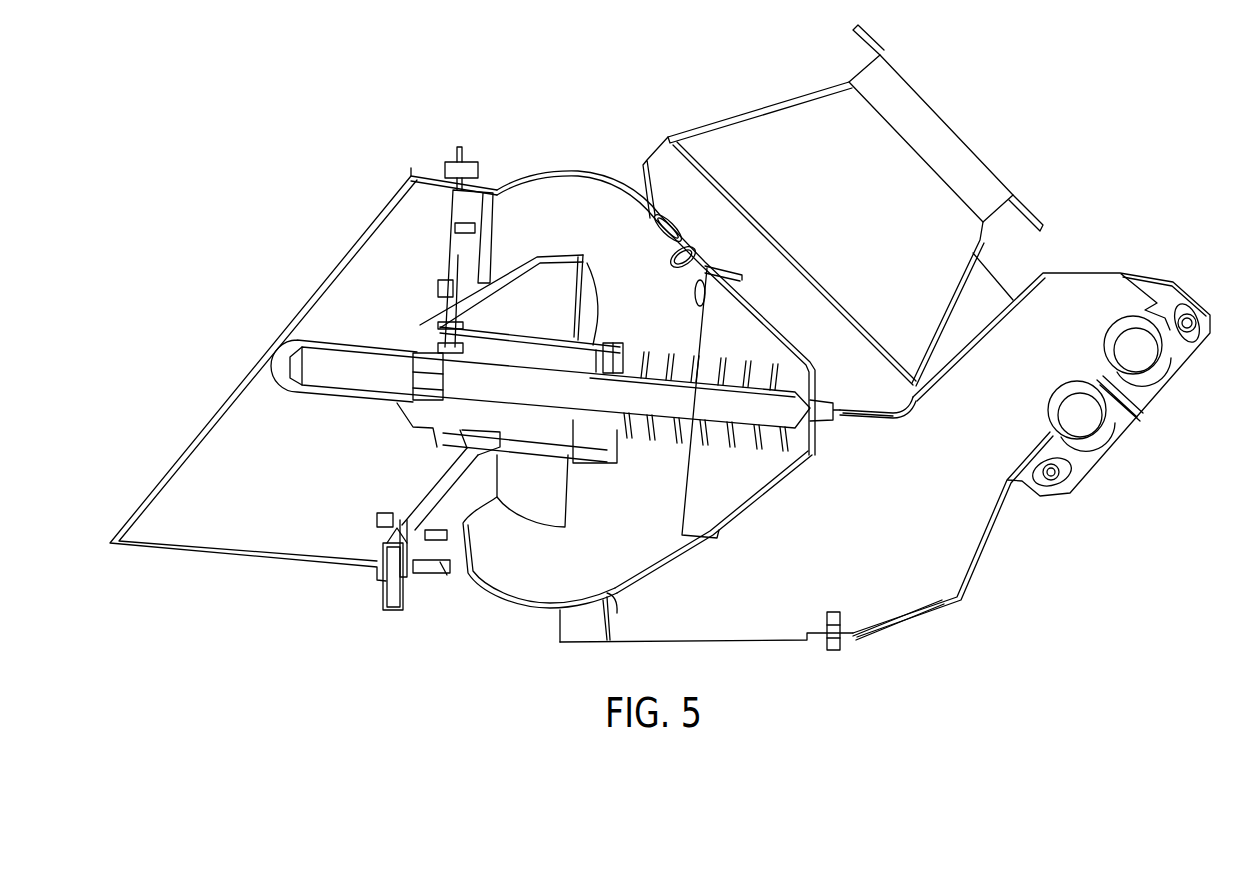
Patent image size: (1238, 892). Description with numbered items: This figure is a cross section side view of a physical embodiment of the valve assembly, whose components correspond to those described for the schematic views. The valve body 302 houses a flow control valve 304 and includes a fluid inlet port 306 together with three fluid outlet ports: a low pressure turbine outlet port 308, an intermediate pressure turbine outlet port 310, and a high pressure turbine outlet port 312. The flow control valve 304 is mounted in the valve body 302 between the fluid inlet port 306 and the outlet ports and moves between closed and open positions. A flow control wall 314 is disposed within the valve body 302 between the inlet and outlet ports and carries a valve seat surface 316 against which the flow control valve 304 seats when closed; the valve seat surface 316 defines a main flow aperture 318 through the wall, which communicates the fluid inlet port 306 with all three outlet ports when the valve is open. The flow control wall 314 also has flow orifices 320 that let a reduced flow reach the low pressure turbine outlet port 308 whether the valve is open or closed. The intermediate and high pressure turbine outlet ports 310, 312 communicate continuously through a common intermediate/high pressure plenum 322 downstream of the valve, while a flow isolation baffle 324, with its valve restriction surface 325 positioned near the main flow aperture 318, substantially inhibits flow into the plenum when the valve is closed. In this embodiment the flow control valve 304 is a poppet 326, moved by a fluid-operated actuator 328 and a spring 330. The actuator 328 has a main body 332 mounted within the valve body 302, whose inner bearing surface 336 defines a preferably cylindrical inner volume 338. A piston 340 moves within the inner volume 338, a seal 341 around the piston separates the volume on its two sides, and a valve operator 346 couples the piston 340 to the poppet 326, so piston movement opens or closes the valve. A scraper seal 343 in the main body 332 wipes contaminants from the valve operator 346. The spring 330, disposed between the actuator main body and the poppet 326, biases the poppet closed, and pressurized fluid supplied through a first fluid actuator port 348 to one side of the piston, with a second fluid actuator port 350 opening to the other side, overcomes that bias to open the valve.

The valve body 302 is at (557, 138).
The flow control valve 304 is at (740, 528).
The fluid inlet port 306 is at (322, 285).
The low pressure turbine outlet port 308 is at (960, 128).
The intermediate pressure turbine outlet port 310 is at (1126, 345).
The high pressure turbine outlet port 312 is at (757, 641).
The flow control wall 314 is at (650, 168).
The valve seat surface 316 is at (740, 262).
The main flow aperture 318 is at (797, 271).
The flow orifices 320 is at (688, 213).
The intermediate/high pressure plenum 322 is at (921, 560).
The flow isolation baffle 324 is at (875, 422).
The valve restriction surface 325 is at (843, 410).
The poppet 326 is at (788, 470).
The fluid-operated actuator 328 is at (540, 313).
The spring 330 is at (748, 362).
The main body 332 is at (582, 262).
The inner bearing surface 336 is at (450, 338).
The inner volume 338 is at (526, 434).
The piston 340 is at (590, 338).
The seal 341 is at (583, 440).
The scraper seal 343 is at (623, 344).
The valve operator 346 is at (735, 432).
The first fluid actuator port 348 is at (382, 605).
The second fluid actuator port 350 is at (405, 420).